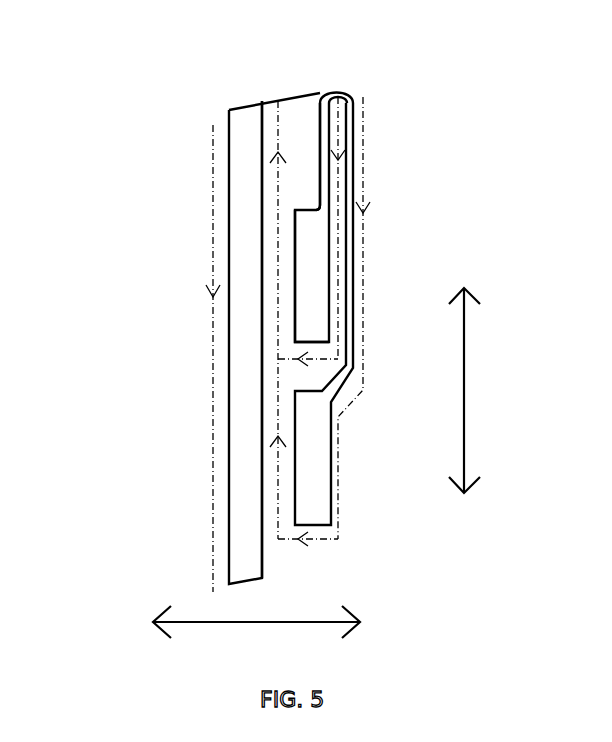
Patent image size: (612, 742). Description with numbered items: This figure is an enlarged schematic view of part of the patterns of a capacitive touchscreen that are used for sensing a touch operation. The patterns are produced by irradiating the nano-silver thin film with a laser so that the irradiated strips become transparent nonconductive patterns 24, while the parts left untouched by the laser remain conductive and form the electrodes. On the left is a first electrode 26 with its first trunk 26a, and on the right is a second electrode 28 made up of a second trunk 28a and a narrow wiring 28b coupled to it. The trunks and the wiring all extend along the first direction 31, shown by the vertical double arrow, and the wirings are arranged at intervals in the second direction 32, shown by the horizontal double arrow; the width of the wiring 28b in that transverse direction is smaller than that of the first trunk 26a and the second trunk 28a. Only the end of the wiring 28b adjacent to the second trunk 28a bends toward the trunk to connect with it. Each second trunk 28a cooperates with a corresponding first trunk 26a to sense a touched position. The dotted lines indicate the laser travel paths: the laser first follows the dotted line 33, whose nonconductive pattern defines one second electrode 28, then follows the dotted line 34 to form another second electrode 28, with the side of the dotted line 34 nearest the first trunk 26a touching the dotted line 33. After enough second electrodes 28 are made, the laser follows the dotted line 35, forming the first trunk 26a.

The nonconductive pattern 24 is at (300, 110).
The first electrode 26 is at (248, 460).
The first trunk 26a is at (230, 357).
The second electrode 28 is at (310, 464).
The second trunk 28a is at (320, 292).
The wiring 28b is at (320, 178).
The first direction 31 is at (483, 390).
The second direction 32 is at (256, 640).
The dotted line 33 is at (352, 183).
The dotted line 34 is at (362, 283).
The dotted line 35 is at (211, 476).